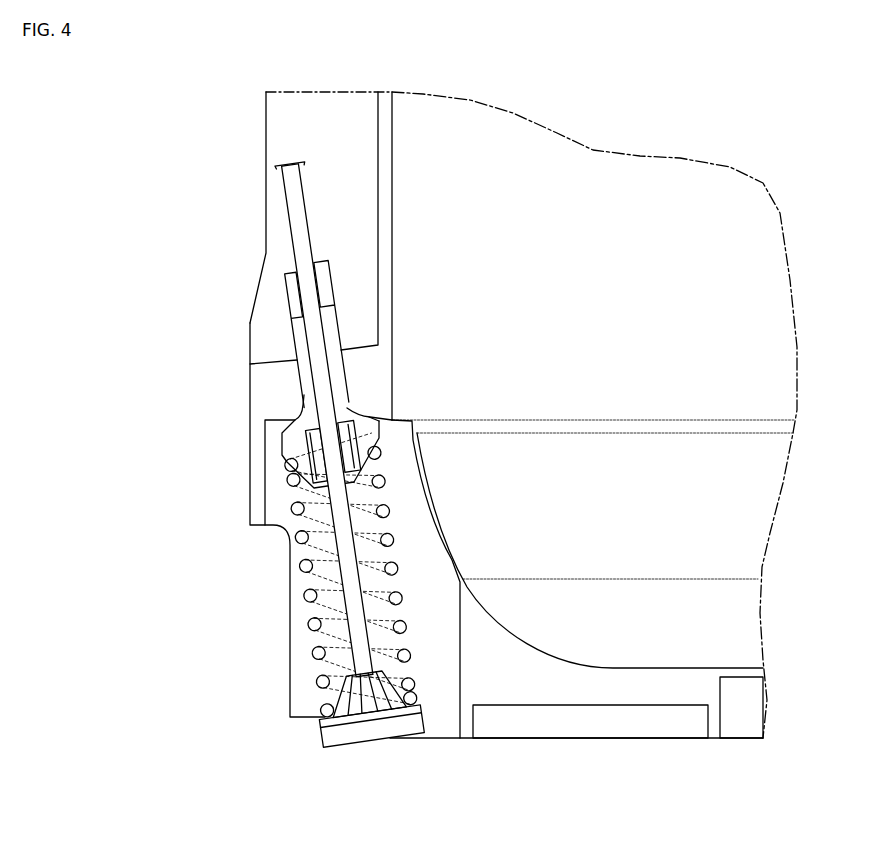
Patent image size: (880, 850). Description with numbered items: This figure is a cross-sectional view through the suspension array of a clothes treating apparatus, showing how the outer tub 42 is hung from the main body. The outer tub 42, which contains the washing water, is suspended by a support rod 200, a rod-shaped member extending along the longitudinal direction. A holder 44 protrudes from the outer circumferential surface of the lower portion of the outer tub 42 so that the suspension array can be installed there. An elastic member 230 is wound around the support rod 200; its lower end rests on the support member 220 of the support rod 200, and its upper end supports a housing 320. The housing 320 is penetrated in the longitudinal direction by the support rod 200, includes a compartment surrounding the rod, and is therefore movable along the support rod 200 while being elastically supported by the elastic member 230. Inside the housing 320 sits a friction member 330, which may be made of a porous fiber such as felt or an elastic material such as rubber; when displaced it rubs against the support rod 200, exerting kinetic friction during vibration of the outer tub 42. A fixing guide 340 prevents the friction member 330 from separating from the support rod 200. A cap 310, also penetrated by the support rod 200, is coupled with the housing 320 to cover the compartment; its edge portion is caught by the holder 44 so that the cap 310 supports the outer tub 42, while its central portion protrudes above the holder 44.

The outer tub 42 is at (378, 130).
The holder 44 is at (258, 385).
The support rod 200 is at (287, 228).
The cap 310 is at (283, 430).
The housing 320 is at (300, 455).
The friction member 330 is at (347, 450).
The fixing guide 340 is at (372, 441).
The elastic member 230 is at (313, 651).
The support member 220 is at (349, 745).